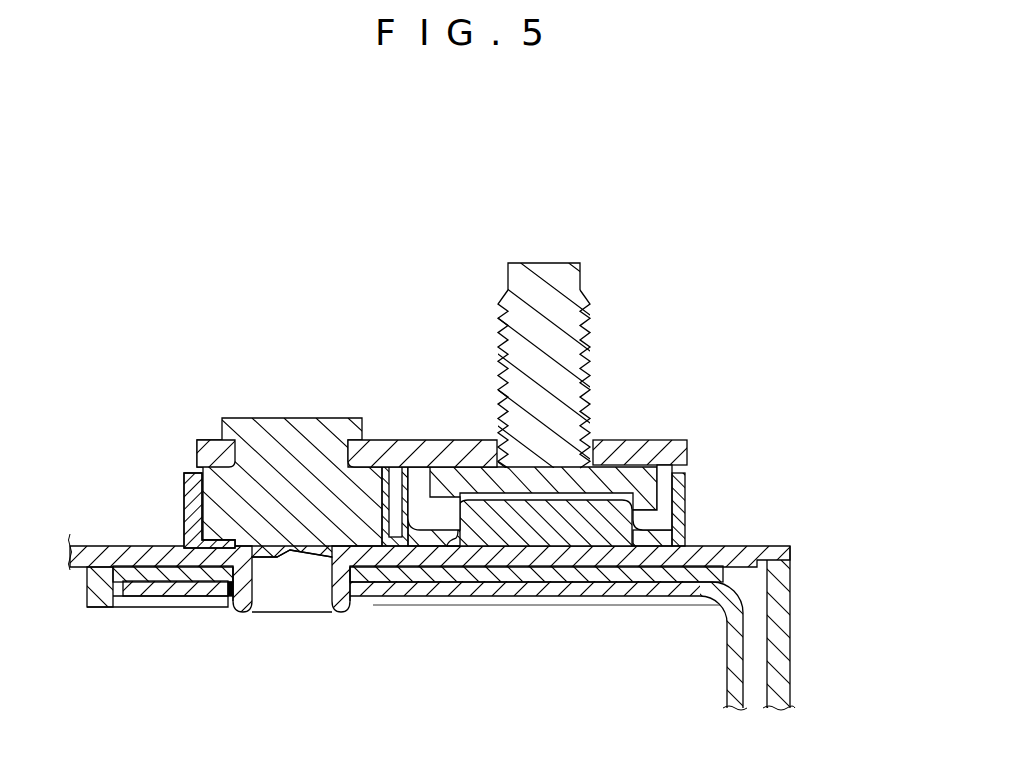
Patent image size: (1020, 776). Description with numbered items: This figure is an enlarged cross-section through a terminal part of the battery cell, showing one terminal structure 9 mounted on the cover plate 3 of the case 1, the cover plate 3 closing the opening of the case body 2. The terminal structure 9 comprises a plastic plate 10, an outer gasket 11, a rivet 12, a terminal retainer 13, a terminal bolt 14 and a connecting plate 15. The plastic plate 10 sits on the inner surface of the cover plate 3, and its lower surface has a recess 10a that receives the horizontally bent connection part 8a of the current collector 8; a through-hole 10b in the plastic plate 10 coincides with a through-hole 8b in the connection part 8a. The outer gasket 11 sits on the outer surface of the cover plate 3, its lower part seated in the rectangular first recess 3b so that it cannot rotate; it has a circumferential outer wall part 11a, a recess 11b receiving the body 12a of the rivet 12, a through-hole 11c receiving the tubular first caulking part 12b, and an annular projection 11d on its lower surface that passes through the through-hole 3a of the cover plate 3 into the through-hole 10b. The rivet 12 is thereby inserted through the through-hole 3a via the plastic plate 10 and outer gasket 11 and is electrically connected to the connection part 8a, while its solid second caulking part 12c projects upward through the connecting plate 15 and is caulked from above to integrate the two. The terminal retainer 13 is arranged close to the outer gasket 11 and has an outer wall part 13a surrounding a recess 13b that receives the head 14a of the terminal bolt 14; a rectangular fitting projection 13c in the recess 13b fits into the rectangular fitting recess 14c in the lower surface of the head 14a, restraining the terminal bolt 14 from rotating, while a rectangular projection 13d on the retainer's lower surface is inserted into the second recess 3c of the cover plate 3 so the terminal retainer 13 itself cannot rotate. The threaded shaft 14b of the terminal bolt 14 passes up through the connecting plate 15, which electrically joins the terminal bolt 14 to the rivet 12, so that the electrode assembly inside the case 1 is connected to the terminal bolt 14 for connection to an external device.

The case 1 is at (858, 540).
The case body 2 is at (777, 634).
The cover plate 3 is at (438, 597).
The through-hole 3a is at (330, 585).
The first recess 3b is at (375, 555).
The second recess 3c is at (552, 537).
The current collector 8 is at (417, 642).
The connection part 8a is at (463, 590).
The through-hole 8b is at (323, 600).
The terminal structure 9 is at (248, 272).
The plastic plate 10 is at (141, 651).
The recess 10a is at (158, 600).
The through-hole 10b is at (231, 585).
The outer gasket 11 is at (415, 330).
The outer wall part 11a is at (392, 478).
The recess 11b is at (350, 510).
The through-hole 11c is at (347, 497).
The annular projection 11d is at (293, 510).
The rivet 12 is at (68, 428).
The body 12a is at (230, 500).
The first caulking part 12b is at (242, 567).
The second caulking part 12c is at (247, 427).
The terminal retainer 13 is at (820, 424).
The outer wall part 13a is at (665, 487).
The recess 13b is at (663, 449).
The fitting projection 13c is at (680, 500).
The projection 13d is at (613, 512).
The terminal bolt 14 is at (537, 396).
The head 14a is at (623, 447).
The shaft 14b is at (588, 332).
The fitting recess 14c is at (447, 510).
The connecting plate 15 is at (667, 447).